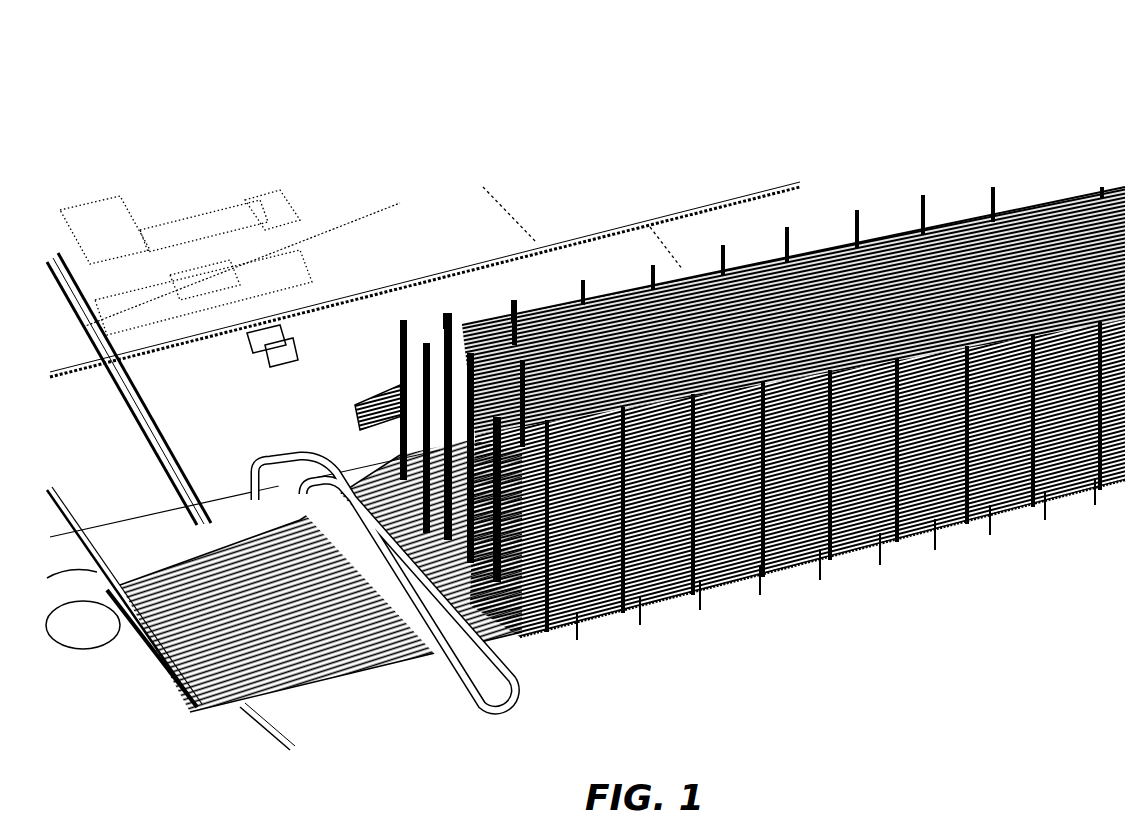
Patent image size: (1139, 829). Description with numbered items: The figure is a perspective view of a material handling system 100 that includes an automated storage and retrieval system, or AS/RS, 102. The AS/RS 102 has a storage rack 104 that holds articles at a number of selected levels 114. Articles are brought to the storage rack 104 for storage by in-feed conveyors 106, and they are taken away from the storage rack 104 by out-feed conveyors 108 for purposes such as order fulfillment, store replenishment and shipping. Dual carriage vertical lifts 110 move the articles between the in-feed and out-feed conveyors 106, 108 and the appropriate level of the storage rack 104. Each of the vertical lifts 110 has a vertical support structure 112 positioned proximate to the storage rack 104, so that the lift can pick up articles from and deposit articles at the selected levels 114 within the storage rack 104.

The material handling system 100 is at (505, 104).
The automated storage and retrieval system (AS/RS) 102 is at (484, 318).
The storage rack 104 is at (695, 542).
The in-feed conveyors 106 is at (457, 585).
The out-feed conveyors 108 is at (473, 612).
The dual carriage vertical lifts 110 is at (498, 512).
The vertical support structure 112 is at (402, 323).
The selected levels 114 is at (589, 473).